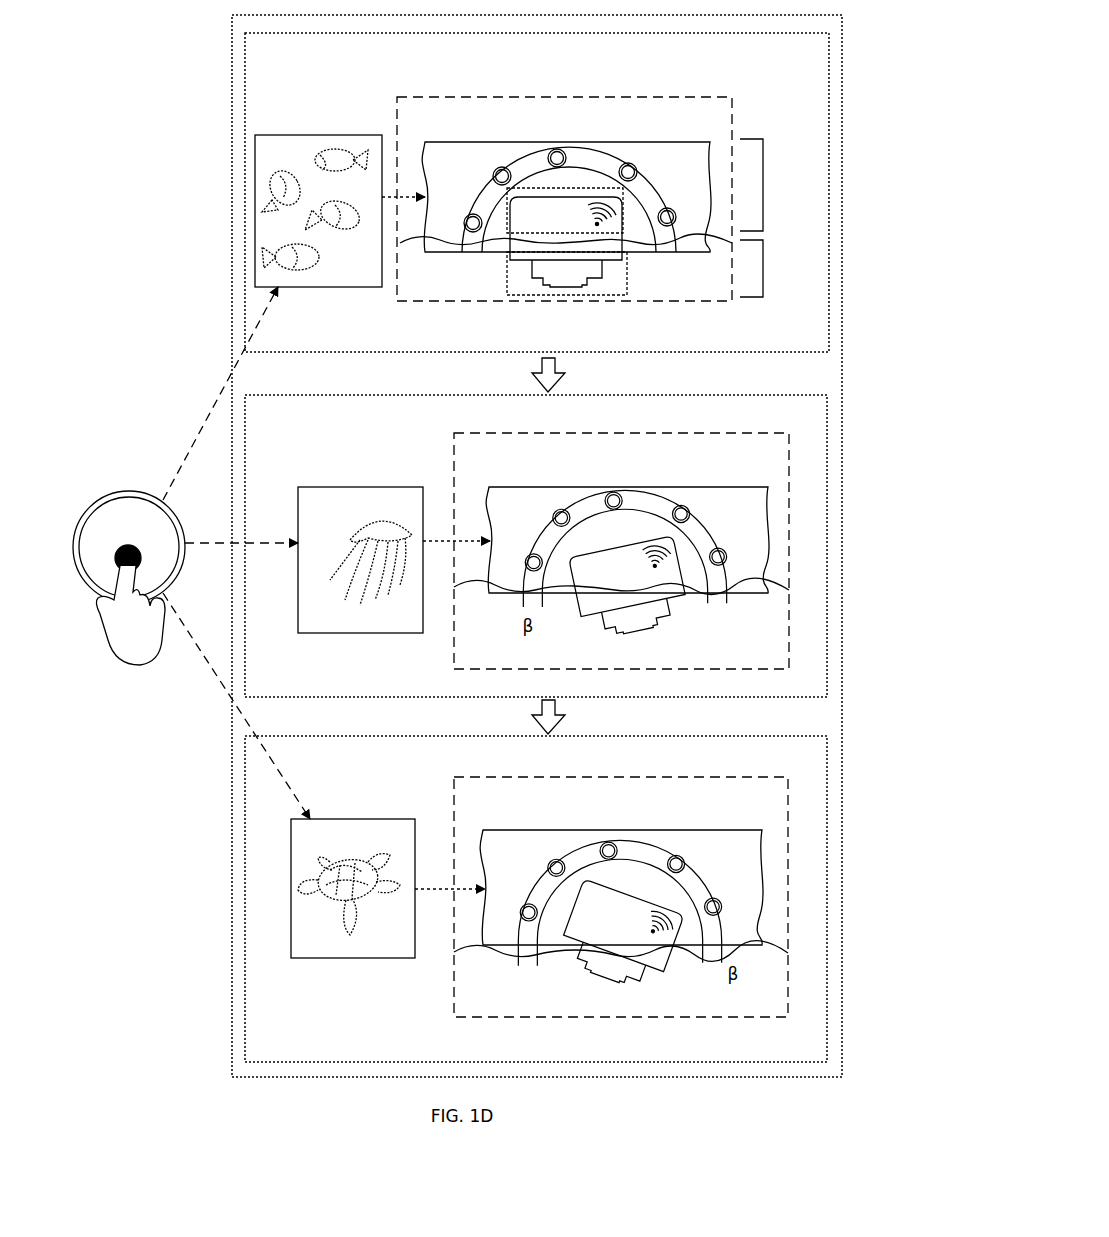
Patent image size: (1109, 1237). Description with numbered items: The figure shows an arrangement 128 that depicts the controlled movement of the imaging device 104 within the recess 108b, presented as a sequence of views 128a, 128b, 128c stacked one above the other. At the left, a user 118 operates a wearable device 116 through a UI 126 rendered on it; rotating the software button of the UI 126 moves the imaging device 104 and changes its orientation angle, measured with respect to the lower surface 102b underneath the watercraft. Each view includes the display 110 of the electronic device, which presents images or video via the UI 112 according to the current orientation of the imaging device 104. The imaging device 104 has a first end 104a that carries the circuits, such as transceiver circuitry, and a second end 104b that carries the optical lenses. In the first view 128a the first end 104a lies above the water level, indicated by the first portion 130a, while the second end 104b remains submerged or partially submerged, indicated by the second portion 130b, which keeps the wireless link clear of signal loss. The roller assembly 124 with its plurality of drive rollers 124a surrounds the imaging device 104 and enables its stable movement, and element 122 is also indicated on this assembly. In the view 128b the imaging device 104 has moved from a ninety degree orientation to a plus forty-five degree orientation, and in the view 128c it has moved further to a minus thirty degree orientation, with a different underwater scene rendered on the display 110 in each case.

The lower surface 102b is at (432, 250).
The imaging device 104 is at (533, 271).
The first end 104a is at (565, 146).
The second end 104b is at (577, 298).
The recess 108b is at (528, 122).
The display 110 is at (330, 137).
The UI 112 is at (265, 152).
The wearable device 116 is at (108, 498).
The user 118 is at (128, 665).
The inner frame 122 is at (598, 252).
The roller assembly 124 is at (569, 156).
The drive rollers 124a is at (596, 146).
The UI 126 is at (135, 540).
The arrangement 128 is at (843, 97).
The view 128a is at (830, 230).
The view 128b is at (827, 488).
The view 128c is at (827, 1008).
The first portion 130a is at (763, 190).
The second portion 130b is at (763, 280).